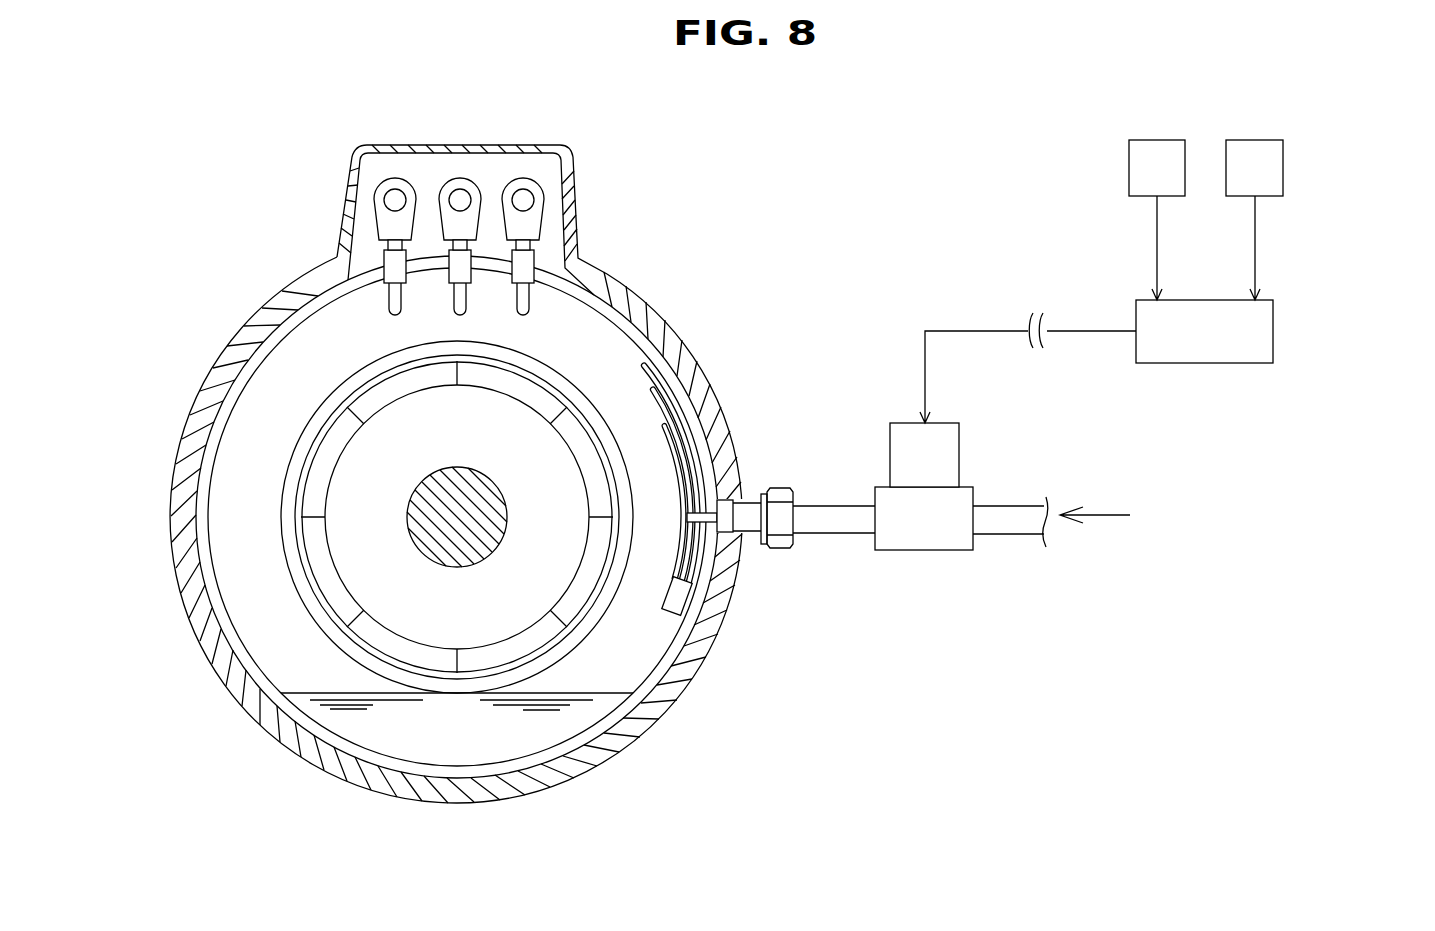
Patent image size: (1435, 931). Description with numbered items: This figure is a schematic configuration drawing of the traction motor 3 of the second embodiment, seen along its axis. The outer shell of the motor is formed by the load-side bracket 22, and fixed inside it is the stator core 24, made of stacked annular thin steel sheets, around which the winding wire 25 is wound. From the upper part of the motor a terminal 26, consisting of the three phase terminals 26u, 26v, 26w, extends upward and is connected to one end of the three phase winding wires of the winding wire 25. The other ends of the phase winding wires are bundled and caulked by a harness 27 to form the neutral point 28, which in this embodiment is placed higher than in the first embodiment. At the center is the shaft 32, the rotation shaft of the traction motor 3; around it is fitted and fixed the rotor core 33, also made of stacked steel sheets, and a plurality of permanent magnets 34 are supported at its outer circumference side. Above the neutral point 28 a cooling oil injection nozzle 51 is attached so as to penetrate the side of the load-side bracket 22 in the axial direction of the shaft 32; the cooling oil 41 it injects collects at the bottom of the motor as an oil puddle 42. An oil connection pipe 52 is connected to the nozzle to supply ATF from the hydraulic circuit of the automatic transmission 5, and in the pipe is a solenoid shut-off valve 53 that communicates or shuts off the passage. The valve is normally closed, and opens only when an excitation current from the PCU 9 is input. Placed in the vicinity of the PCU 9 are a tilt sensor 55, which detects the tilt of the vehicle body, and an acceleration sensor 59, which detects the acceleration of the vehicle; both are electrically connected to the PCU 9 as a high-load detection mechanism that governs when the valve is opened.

The traction motor 3 is at (156, 140).
The load-side bracket 22 is at (222, 653).
The stator core 24 is at (262, 303).
The winding wire 25 is at (342, 312).
The terminal 26 is at (592, 87).
The terminal 26u is at (393, 186).
The terminal 26v is at (462, 183).
The terminal 26w is at (528, 183).
The harness 27 is at (698, 605).
The neutral point 28 is at (690, 590).
The shaft 32 is at (428, 490).
The rotor core 33 is at (372, 548).
The permanent magnets 34 is at (315, 488).
The cooling oil 41 is at (513, 735).
The oil puddle 42 is at (373, 732).
The cooling oil injection nozzle 51 is at (710, 515).
The oil connection pipe 52 is at (1007, 515).
The solenoid shut-off valve 53 is at (907, 535).
The automatic transmission 5 is at (1131, 541).
The tilt sensor 55 is at (1142, 140).
The acceleration sensor 59 is at (1265, 140).
The PCU 9 is at (1202, 363).